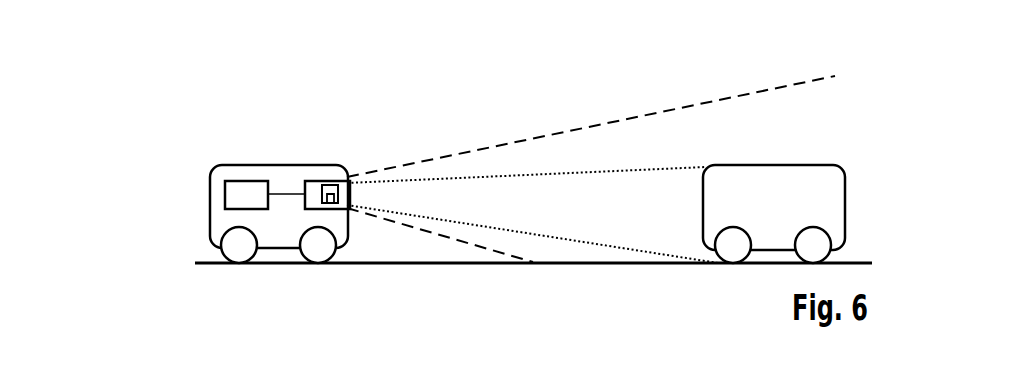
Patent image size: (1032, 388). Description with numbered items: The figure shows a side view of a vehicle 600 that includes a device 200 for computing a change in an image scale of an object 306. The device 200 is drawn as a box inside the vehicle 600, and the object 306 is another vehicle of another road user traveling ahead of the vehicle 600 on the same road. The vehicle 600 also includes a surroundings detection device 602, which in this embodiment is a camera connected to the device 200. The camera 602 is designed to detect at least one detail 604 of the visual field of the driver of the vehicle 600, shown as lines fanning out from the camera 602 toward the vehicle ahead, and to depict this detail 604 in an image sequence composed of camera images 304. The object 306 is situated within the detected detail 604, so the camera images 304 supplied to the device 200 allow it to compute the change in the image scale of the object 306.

The vehicle 600 is at (272, 74).
The device for computing a change in an image scale 200 is at (160, 193).
The camera images 304 is at (327, 183).
The surroundings detection device 602 is at (338, 181).
The detail of a visual field 604 is at (558, 84).
The object 306 is at (773, 165).